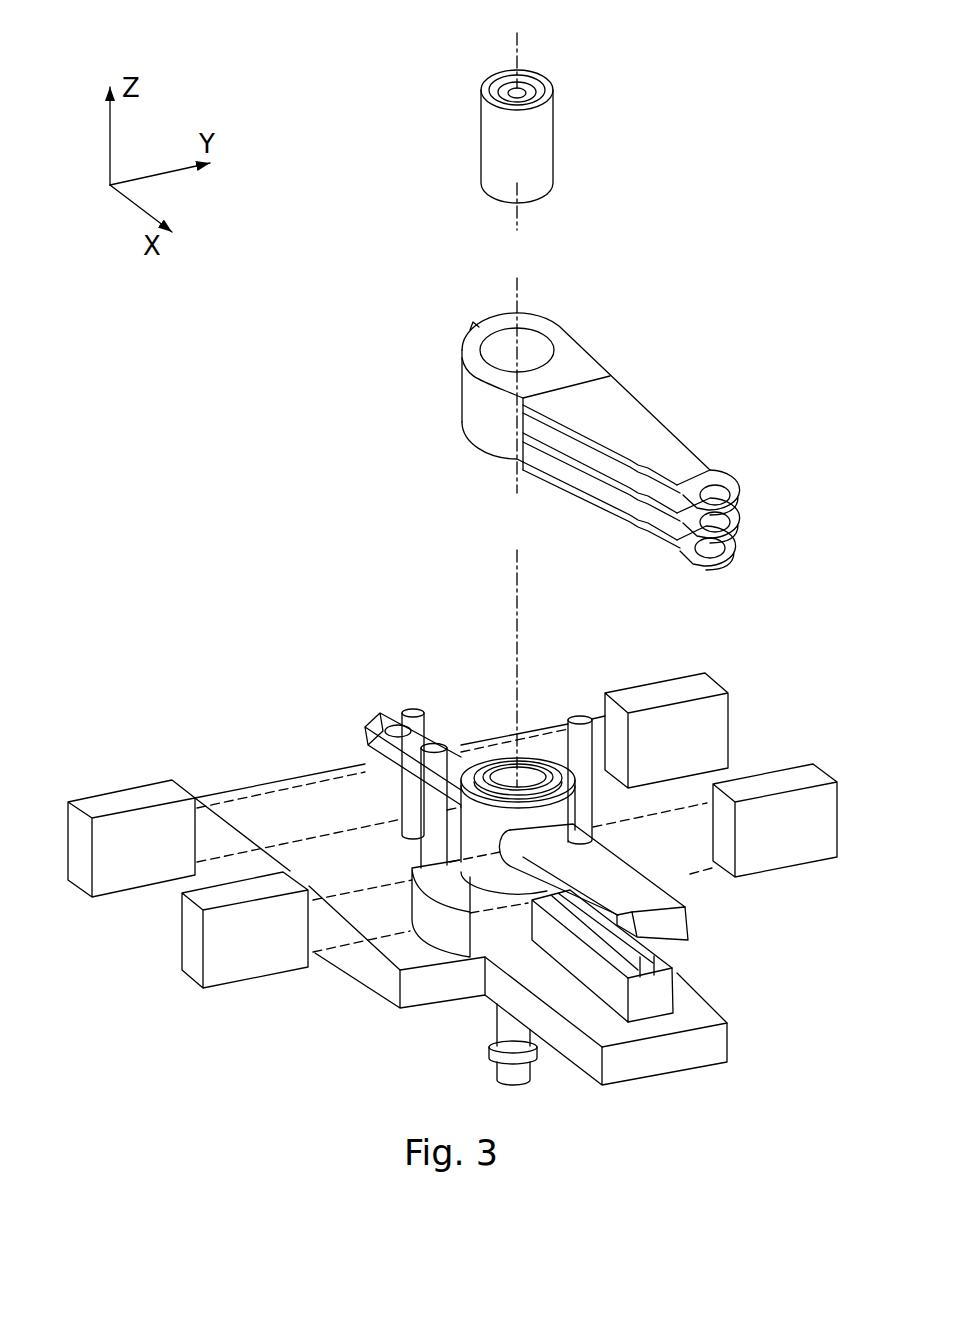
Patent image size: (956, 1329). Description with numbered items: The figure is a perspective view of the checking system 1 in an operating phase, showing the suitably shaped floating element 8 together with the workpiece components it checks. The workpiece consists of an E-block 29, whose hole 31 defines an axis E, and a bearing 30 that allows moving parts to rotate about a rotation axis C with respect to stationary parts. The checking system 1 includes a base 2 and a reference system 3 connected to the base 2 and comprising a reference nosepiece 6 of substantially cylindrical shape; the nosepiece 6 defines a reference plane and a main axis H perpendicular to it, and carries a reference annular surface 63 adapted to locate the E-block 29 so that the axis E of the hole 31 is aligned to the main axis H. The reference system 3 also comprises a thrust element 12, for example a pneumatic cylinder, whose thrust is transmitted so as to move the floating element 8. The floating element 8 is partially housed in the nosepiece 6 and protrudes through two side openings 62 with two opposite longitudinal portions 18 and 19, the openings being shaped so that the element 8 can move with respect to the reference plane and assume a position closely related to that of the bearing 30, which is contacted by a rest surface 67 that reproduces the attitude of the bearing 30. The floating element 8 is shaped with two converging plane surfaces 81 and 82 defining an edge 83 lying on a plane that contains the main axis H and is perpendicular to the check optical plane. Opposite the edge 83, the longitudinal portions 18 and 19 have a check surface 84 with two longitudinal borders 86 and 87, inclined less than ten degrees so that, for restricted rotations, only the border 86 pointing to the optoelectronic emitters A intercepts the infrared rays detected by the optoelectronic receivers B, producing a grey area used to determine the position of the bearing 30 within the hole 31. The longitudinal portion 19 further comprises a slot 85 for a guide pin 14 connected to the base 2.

The checking system 1 is at (250, 588).
The base 2 is at (369, 964).
The reference system 3 is at (537, 695).
The reference nosepiece 6 is at (550, 745).
The floating element 8 is at (354, 723).
The thrust element 12 is at (506, 1025).
The guide pin 14 is at (413, 717).
The longitudinal portion 18 is at (658, 887).
The longitudinal portion 19 is at (383, 730).
The E-block 29 is at (558, 411).
The bearing 30 is at (530, 165).
The hole 31 is at (500, 350).
The side openings 62 is at (582, 824).
The reference annular surface 63 is at (567, 778).
The rest surface 67 is at (502, 766).
The converging plane surface 81 is at (612, 905).
The converging plane surface 82 is at (636, 893).
The edge 83 is at (450, 767).
The check surface 84 is at (651, 934).
The slot 85 is at (397, 727).
The longitudinal border 86 is at (649, 1003).
The longitudinal border 87 is at (657, 921).
The optoelectronic emitter A is at (192, 962).
The optoelectronic receiver B is at (806, 781).
The rotation axis C is at (520, 45).
The axis E is at (520, 285).
The main axis H is at (517, 557).